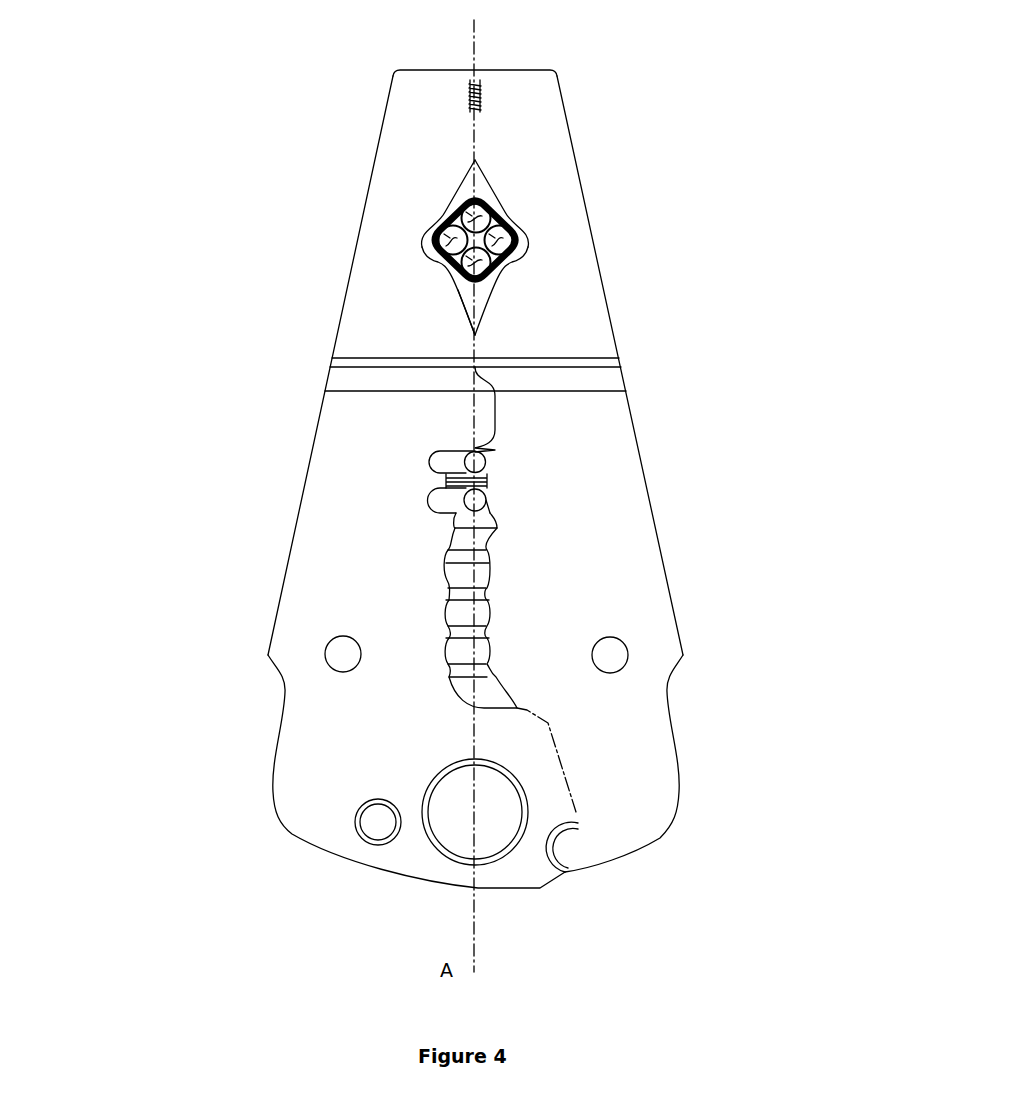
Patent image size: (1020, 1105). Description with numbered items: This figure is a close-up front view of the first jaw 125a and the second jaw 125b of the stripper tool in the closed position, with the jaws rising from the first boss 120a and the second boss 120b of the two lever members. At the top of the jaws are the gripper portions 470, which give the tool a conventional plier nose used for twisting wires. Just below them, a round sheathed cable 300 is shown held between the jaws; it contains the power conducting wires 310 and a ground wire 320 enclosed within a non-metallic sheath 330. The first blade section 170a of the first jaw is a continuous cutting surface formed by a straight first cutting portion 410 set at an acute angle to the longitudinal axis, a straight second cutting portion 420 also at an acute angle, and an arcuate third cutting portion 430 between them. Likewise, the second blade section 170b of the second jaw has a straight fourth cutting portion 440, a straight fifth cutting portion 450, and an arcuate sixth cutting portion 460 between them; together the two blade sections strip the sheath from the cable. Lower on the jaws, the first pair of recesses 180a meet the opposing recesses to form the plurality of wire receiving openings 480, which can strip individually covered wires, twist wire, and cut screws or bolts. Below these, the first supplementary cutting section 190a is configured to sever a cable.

The first jaw 125a is at (167, 420).
The second jaw 125b is at (826, 381).
The first boss 120a is at (374, 762).
The second boss 120b is at (655, 754).
The gripper portions 470 is at (512, 75).
The first cutting portion 410 is at (387, 160).
The fourth cutting portion 440 is at (563, 159).
The second cutting portion 420 is at (328, 291).
The fifth cutting portion 450 is at (599, 274).
The third cutting portion 430 is at (391, 204).
The sixth cutting portion 460 is at (575, 210).
The round sheathed cable 300 is at (540, 238).
The ground wire 320 is at (500, 208).
The non-metallic sheath 330 is at (438, 241).
The power conducting wires 310 is at (447, 277).
The first blade section 170a is at (432, 314).
The second blade section 170b is at (512, 319).
The first pair of recesses 180a is at (437, 502).
The wire receiving openings 480 is at (509, 491).
The first supplementary cutting section 190a is at (523, 625).